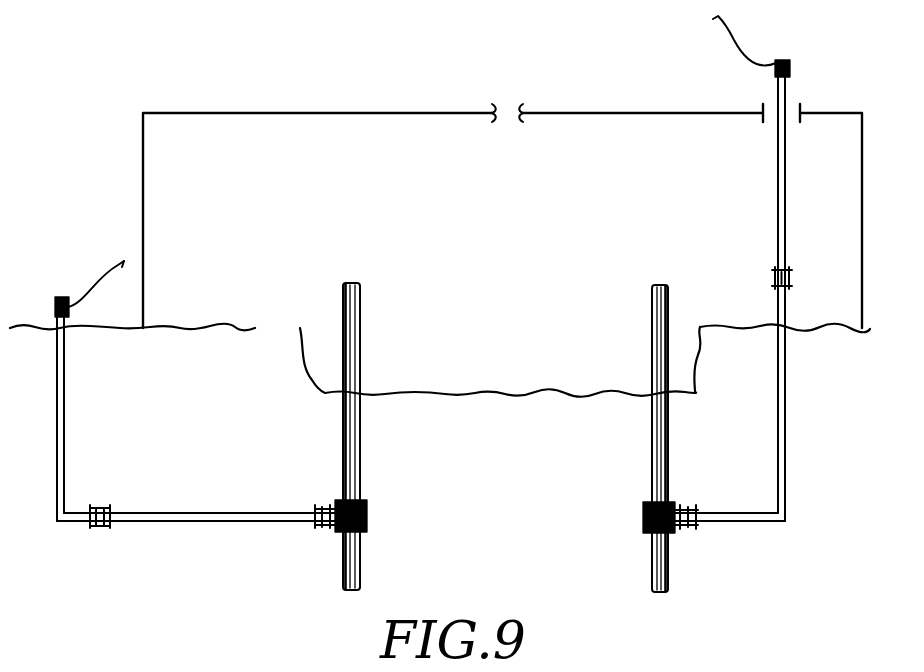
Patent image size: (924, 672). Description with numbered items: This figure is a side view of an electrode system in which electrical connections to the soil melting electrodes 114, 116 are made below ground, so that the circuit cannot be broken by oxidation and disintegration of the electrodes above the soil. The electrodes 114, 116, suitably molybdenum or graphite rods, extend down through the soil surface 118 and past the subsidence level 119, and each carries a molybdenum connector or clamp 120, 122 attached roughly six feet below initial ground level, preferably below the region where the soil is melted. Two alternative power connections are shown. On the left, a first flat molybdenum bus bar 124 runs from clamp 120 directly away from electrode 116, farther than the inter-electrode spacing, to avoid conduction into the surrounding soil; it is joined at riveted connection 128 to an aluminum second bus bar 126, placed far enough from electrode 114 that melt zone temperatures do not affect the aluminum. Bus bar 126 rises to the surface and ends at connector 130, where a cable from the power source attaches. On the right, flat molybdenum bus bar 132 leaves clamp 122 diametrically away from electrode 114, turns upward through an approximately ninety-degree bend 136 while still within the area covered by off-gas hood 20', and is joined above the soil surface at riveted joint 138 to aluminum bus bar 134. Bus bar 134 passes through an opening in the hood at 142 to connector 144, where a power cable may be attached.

The off-gas hood 20' is at (502, 194).
The soil melting electrode 114 is at (360, 340).
The soil melting electrode 116 is at (652, 338).
The soil surface 118 is at (236, 328).
The subsidence level 119 is at (493, 394).
The connector or clamp 120 is at (367, 524).
The connector or clamp 122 is at (643, 522).
The first flat bus bar 124 is at (296, 524).
The second bus bar 126 is at (64, 458).
The riveted connection 128 is at (98, 528).
The connector 130 is at (62, 297).
The flat molybdenum bus bar 132 is at (786, 493).
The aluminum bus bar 134 is at (778, 220).
The bend 136 is at (788, 521).
The riveted joint 138 is at (793, 277).
The opening in the hood 142 is at (799, 115).
The connector 144 is at (790, 66).